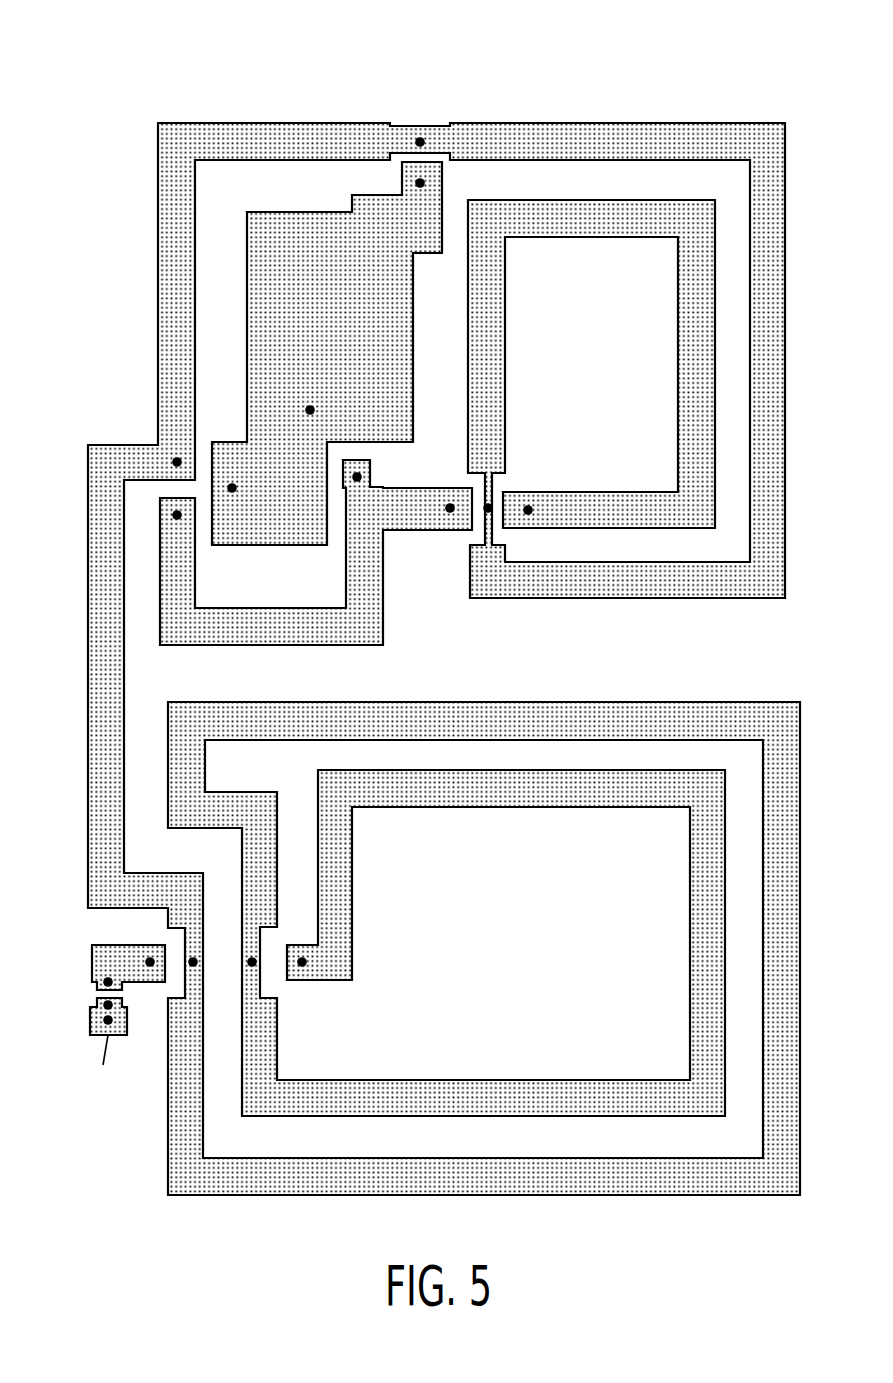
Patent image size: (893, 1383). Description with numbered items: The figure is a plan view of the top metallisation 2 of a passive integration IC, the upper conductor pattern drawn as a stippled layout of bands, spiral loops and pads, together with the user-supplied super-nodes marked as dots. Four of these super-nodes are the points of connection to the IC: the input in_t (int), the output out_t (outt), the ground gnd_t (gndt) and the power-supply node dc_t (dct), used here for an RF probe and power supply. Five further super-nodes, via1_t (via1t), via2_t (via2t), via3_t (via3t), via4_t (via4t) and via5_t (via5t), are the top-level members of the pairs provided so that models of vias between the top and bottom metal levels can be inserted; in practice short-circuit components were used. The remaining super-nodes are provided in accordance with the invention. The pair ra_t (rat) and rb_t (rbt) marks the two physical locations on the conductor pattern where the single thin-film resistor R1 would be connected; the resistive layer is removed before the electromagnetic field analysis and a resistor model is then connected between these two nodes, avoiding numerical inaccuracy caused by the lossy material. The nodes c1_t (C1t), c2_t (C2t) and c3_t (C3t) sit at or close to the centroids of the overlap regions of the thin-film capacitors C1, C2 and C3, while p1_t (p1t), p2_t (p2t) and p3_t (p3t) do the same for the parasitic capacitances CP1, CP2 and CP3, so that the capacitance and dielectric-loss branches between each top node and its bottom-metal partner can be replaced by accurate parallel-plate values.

The top metallisation 2 is at (238, 108).
The super-node c1_t C1t is at (420, 140).
The super-node via1_t via1t is at (420, 183).
The super-node via2_t via2t is at (310, 410).
The super-node out_t outt is at (177, 462).
The super-node in_t int is at (177, 515).
The super-node gnd_t gndt is at (232, 488).
The super-node c3_t C3t is at (358, 477).
The super-node c2_t C2t is at (450, 508).
The super-node p3_t p3t is at (488, 508).
The super-node via3_t via3t is at (528, 510).
The super-node via5_t via5t is at (150, 962).
The super-node rb_t rbt is at (108, 982).
The super-node ra_t rat is at (108, 1020).
The super-node dc_t dct is at (100, 1069).
The super-node p1_t p1t is at (193, 962).
The super-node p2_t p2t is at (252, 962).
The super-node via4_t via4t is at (302, 962).